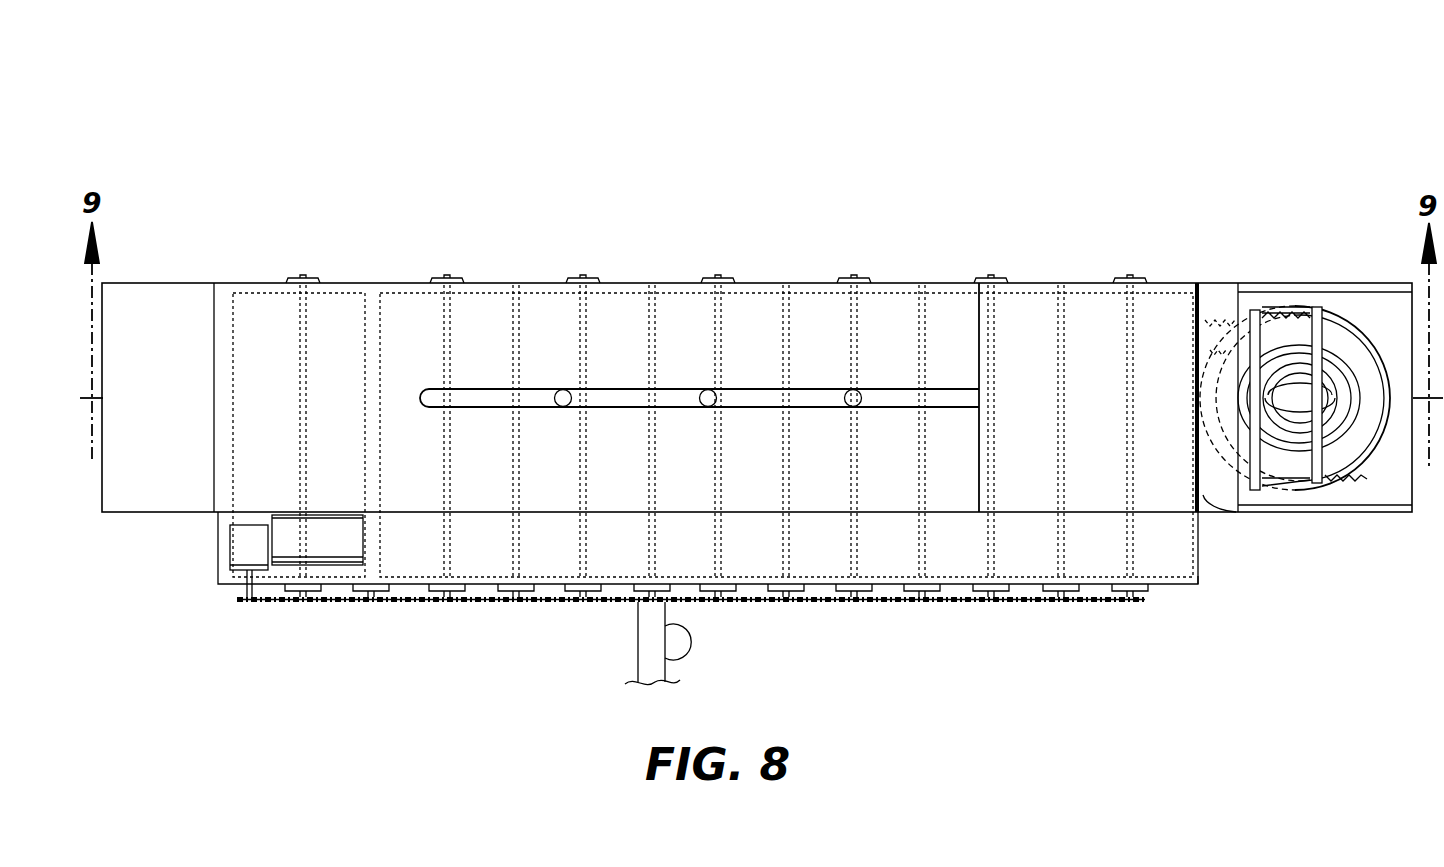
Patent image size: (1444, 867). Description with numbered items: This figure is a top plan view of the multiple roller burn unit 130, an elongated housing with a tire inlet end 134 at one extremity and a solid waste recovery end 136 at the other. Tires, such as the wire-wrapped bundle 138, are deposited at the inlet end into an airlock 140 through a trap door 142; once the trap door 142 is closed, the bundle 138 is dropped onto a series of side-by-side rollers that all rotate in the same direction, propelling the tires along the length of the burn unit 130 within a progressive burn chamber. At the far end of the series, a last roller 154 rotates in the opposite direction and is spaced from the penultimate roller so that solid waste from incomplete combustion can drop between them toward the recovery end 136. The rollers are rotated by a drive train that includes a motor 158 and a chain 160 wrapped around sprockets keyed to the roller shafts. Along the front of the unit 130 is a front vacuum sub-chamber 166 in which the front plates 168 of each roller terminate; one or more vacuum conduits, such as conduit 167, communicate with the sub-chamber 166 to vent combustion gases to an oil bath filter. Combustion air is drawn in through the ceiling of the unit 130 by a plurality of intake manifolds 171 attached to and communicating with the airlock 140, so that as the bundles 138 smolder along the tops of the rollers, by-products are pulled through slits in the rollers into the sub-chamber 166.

The multiple roller burn unit 130 is at (415, 213).
The tire inlet end 134 is at (1240, 252).
The solid waste recovery end 136 is at (186, 600).
The wire-wrapped tire bundle 138 is at (1292, 307).
The airlock 140 is at (1088, 397).
The trap door 142 is at (1230, 513).
The last roller 154 is at (233, 316).
The motor 158 is at (325, 547).
The chain 160 is at (1108, 602).
The front vacuum sub-chamber 166 is at (1200, 580).
The vacuum conduit 167 is at (638, 645).
The front plates 168 is at (957, 577).
The intake manifolds 171 is at (588, 389).